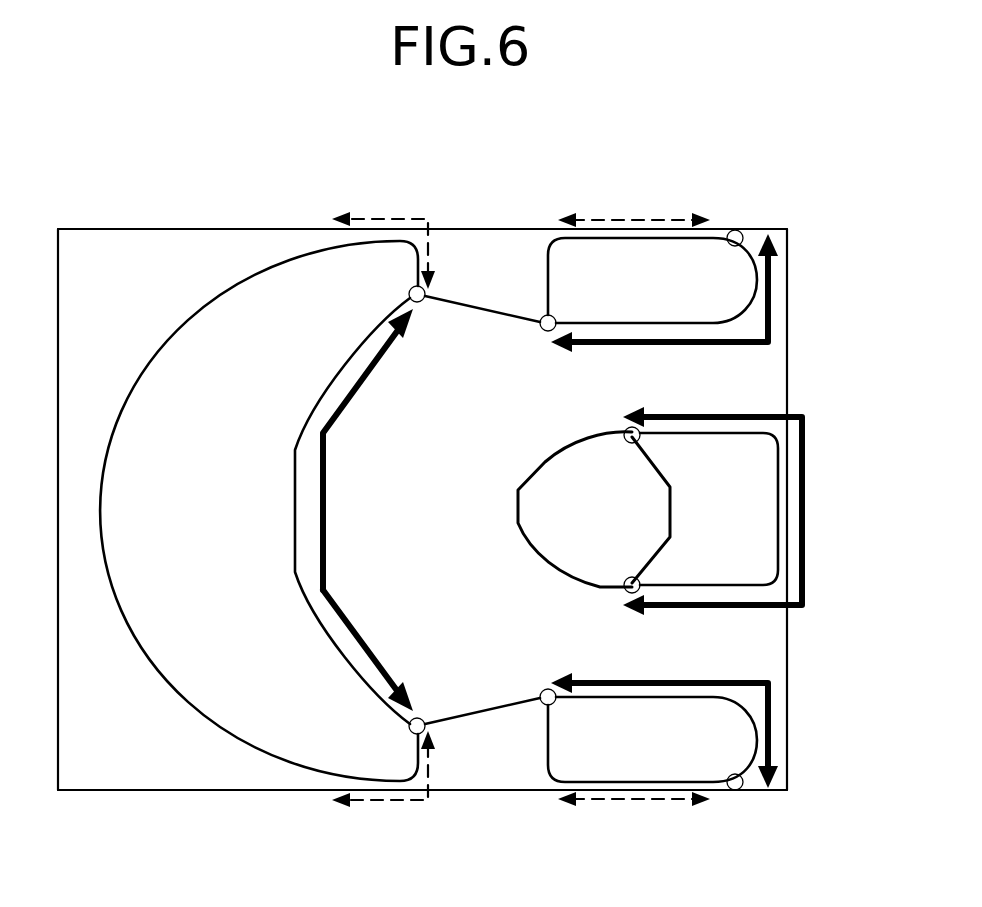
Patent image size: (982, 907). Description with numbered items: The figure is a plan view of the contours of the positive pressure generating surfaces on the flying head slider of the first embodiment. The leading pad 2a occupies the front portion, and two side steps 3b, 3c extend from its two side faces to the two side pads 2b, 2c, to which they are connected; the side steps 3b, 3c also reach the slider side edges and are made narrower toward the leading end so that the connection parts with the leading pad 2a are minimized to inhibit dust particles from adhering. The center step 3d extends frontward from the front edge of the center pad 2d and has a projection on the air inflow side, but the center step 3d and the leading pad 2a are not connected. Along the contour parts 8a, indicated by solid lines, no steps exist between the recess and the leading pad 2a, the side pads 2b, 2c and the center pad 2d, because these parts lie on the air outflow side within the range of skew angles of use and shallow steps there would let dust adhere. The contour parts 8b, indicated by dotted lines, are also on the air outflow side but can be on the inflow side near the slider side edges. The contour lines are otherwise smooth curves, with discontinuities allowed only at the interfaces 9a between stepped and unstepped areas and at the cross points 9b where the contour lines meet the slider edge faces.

The leading pad 2a is at (297, 270).
The side pad 2b is at (665, 257).
The side pad 2c is at (645, 765).
The center pad 2d is at (760, 533).
The side step 3b is at (492, 240).
The side step 3c is at (493, 770).
The center step 3d is at (642, 506).
The contour parts 8a is at (770, 292).
The contour parts 8b is at (380, 217).
The interfaces 9a is at (422, 302).
The cross points 9b is at (738, 232).